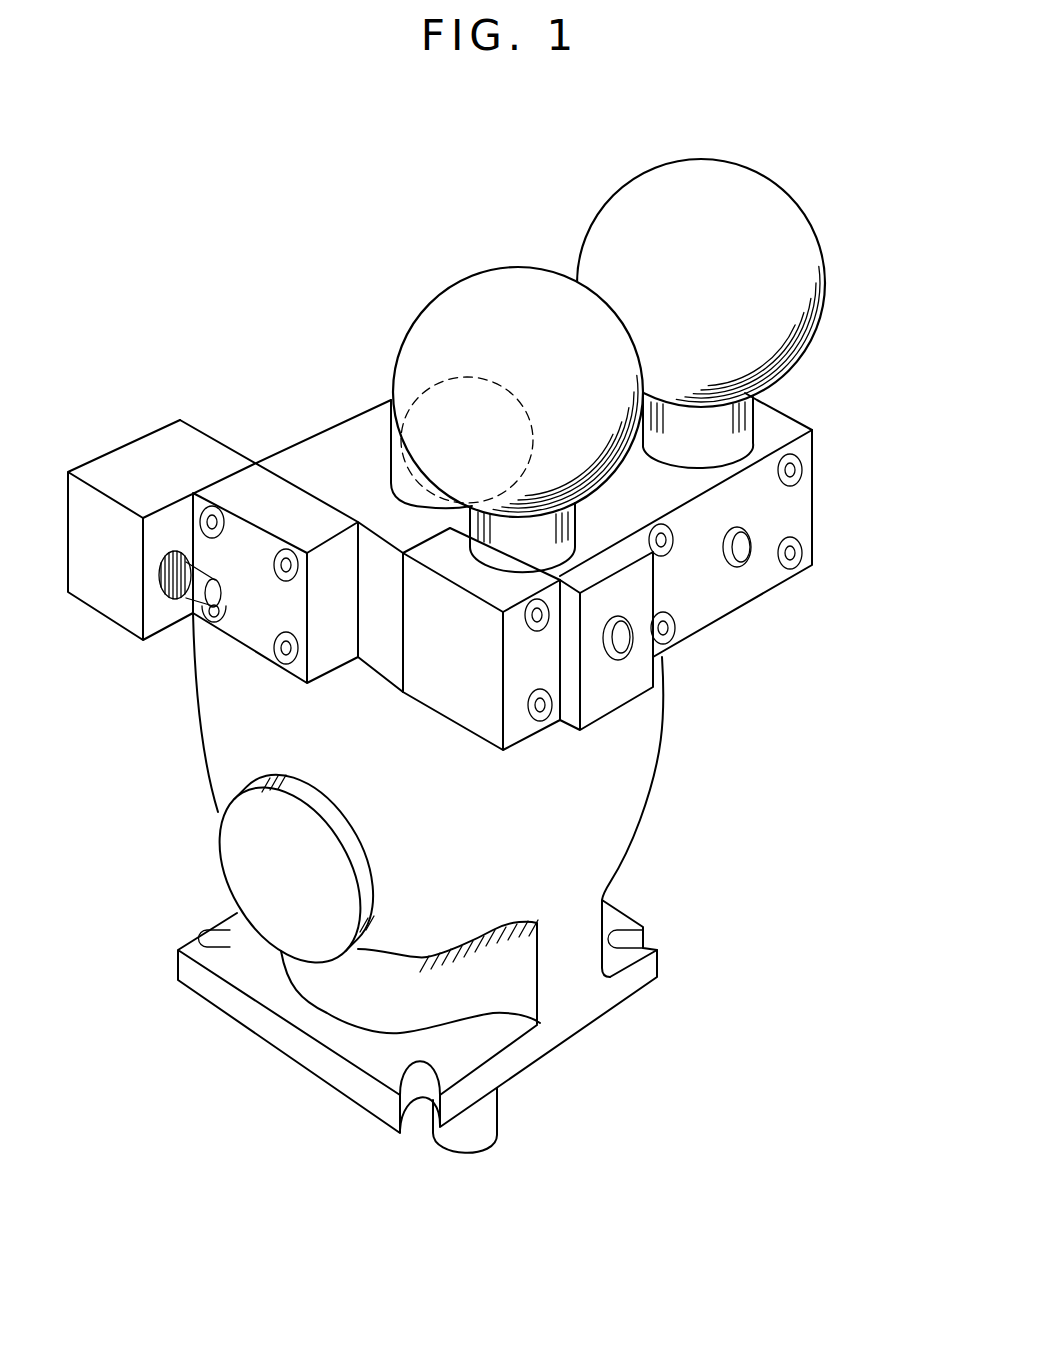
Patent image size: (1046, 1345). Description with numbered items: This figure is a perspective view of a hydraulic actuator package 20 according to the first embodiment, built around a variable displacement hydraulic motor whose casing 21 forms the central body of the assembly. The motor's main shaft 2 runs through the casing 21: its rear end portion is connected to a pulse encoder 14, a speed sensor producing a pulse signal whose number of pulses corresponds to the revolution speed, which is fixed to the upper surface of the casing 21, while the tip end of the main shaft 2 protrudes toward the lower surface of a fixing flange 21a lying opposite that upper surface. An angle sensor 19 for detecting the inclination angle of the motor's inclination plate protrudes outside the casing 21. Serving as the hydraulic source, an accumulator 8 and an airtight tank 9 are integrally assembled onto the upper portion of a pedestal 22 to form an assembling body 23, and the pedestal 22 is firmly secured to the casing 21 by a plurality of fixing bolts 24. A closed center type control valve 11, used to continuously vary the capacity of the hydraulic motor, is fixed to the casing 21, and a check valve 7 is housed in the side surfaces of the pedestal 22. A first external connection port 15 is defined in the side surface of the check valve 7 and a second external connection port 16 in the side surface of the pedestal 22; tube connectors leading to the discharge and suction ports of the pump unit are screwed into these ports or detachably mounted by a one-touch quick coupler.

The main shaft 2 is at (487, 1122).
The check valve 7 is at (638, 700).
The accumulator 8 is at (355, 262).
The airtight tank 9 is at (590, 208).
The control valve 11 is at (120, 633).
The pulse encoder 14 is at (403, 481).
The first external connection port 15 is at (632, 652).
The second external connection port 16 is at (748, 558).
The angle sensor 19 is at (242, 870).
The hydraulic actuator package 20 is at (328, 386).
The casing 21 is at (640, 834).
The fixing flange 21a is at (357, 1095).
The pedestal 22 is at (803, 467).
The assembling body 23 is at (782, 407).
The fixing bolts 24 is at (802, 550).